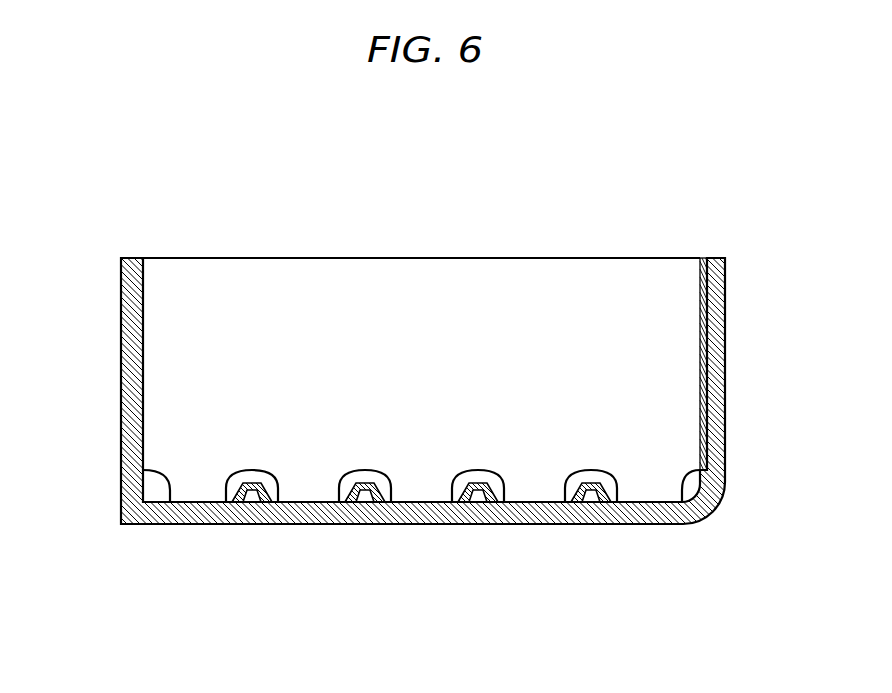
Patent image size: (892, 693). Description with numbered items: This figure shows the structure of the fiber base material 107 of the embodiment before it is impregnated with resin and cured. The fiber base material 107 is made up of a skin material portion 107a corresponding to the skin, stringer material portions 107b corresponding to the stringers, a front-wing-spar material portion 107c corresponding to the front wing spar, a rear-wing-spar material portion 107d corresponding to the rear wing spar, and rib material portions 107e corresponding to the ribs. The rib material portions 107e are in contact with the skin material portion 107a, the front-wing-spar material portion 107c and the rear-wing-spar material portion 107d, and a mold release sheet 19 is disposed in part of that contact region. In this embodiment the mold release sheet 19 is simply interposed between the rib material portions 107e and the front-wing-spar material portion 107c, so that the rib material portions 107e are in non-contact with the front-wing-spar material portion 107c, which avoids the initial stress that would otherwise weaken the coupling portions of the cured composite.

The fiber base material 107 is at (254, 131).
The skin material portion 107a is at (370, 515).
The stringer material portions 107b is at (589, 484).
The front-wing-spar material portion 107c is at (718, 264).
The rear-wing-spar material portion 107d is at (130, 268).
The rib material portions 107e is at (418, 272).
The mold release sheet 19 is at (708, 262).